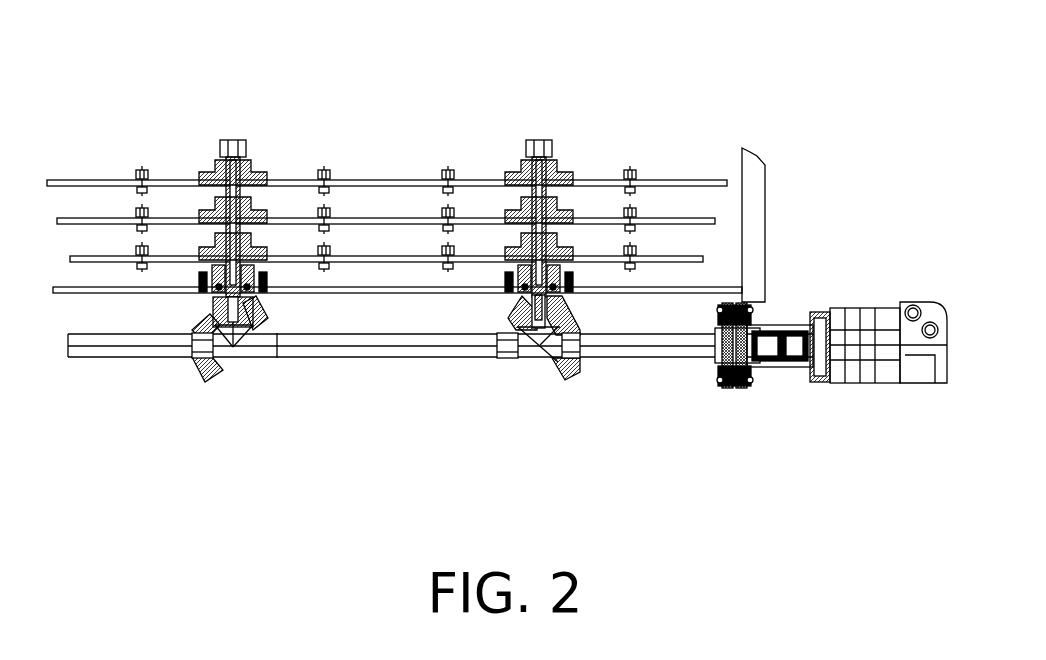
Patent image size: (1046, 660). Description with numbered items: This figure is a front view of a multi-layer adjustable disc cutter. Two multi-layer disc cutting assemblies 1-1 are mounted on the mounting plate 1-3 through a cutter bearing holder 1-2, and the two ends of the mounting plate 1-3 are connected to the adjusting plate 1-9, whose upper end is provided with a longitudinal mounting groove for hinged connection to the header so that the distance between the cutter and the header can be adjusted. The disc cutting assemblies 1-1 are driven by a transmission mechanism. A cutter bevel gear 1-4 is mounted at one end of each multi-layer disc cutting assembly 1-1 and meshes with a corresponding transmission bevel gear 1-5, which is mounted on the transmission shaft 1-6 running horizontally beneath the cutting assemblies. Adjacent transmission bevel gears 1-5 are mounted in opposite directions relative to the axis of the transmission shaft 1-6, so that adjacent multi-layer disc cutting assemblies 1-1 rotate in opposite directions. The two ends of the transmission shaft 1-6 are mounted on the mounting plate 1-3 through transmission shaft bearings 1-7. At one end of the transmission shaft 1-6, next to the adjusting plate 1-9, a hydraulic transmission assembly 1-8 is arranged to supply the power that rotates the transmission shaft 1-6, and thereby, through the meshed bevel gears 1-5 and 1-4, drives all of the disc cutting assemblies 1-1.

The multi-layer disc cutting assemblies 1-1 is at (608, 173).
The cutter bearing holder 1-2 is at (510, 278).
The mounting plate 1-3 is at (330, 288).
The cutter bevel gears 1-4 is at (508, 318).
The transmission bevel gears 1-5 is at (563, 372).
The transmission shaft 1-6 is at (627, 350).
The transmission shaft bearings 1-7 is at (718, 358).
The hydraulic transmission assembly 1-8 is at (878, 358).
The adjusting plate 1-9 is at (750, 250).